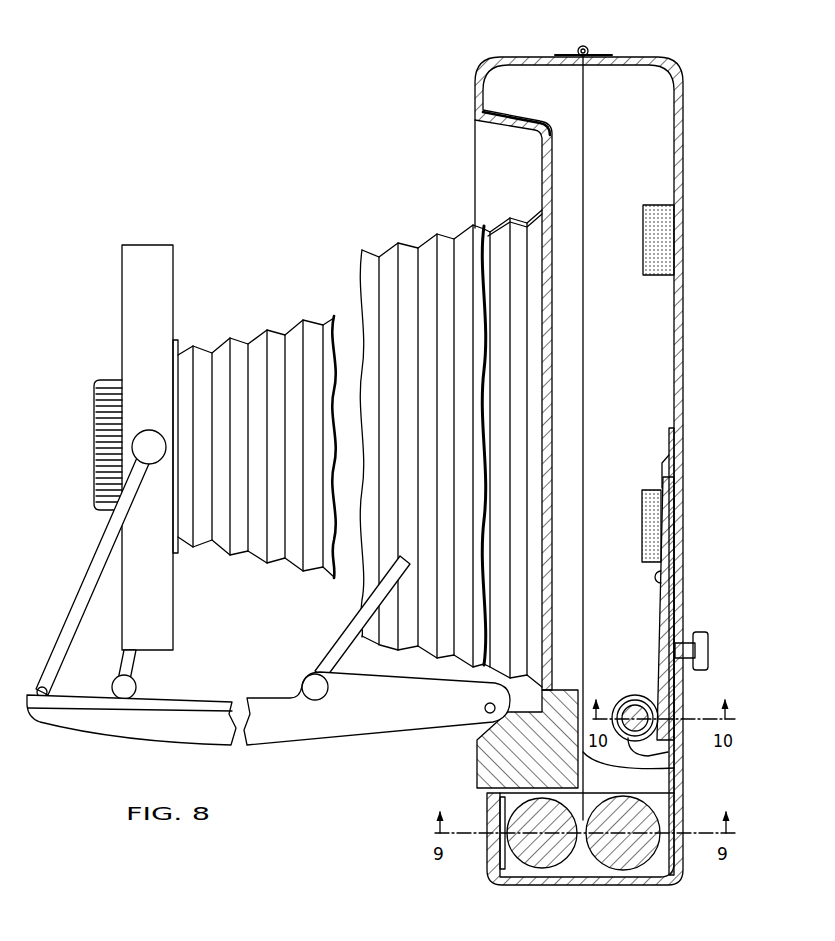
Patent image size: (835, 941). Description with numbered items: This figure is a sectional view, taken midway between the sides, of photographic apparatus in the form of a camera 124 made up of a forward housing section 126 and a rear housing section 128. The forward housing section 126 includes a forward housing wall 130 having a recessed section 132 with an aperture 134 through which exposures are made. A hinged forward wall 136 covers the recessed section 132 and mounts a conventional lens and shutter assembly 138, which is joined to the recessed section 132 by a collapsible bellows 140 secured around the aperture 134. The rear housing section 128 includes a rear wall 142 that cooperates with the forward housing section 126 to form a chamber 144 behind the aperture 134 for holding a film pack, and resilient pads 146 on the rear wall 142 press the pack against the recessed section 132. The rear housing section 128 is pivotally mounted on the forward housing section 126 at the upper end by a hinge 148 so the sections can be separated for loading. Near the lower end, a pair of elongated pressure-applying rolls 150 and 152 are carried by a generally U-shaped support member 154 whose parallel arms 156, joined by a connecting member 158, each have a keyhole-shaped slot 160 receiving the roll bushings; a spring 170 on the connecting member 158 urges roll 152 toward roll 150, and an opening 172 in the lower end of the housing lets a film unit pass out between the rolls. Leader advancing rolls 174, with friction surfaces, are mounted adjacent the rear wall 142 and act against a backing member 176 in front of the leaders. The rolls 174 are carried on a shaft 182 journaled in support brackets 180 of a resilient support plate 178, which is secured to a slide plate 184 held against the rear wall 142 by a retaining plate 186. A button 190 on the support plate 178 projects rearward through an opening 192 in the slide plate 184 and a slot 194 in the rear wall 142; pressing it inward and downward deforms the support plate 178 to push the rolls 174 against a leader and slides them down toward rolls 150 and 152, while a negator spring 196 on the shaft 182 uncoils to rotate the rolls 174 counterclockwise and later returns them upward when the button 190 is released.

The camera 124 is at (345, 208).
The forward housing section 126 is at (473, 80).
The rear housing section 128 is at (680, 66).
The forward housing wall 130 is at (475, 100).
The recessed section 132 is at (545, 165).
The aperture 134 is at (548, 232).
The hinged forward wall 136 is at (285, 740).
The lens and shutter assembly 138 is at (167, 241).
The collapsible bellows 140 is at (366, 297).
The rear wall 142 is at (678, 331).
The chamber 144 is at (662, 293).
The pads 146 is at (665, 228).
The hinge 148 is at (588, 48).
The pressure-applying roll 150 is at (628, 876).
The pressure-applying roll 152 is at (545, 866).
The support member 154 is at (486, 883).
The arms 156 is at (678, 797).
The connecting member 158 is at (490, 862).
The keyhole-shaped slot 160 is at (492, 793).
The spring 170 is at (500, 822).
The opening 172 is at (585, 886).
The rolls 174 is at (650, 756).
The backing member 176 is at (672, 772).
The support plate 178 is at (668, 696).
The support brackets 180 is at (655, 733).
The shaft 182 is at (642, 716).
The slide plate 184 is at (672, 605).
The retaining plate 186 is at (672, 452).
The button 190 is at (708, 650).
The opening 192 is at (683, 638).
The slot 194 is at (677, 684).
The negator spring 196 is at (662, 572).